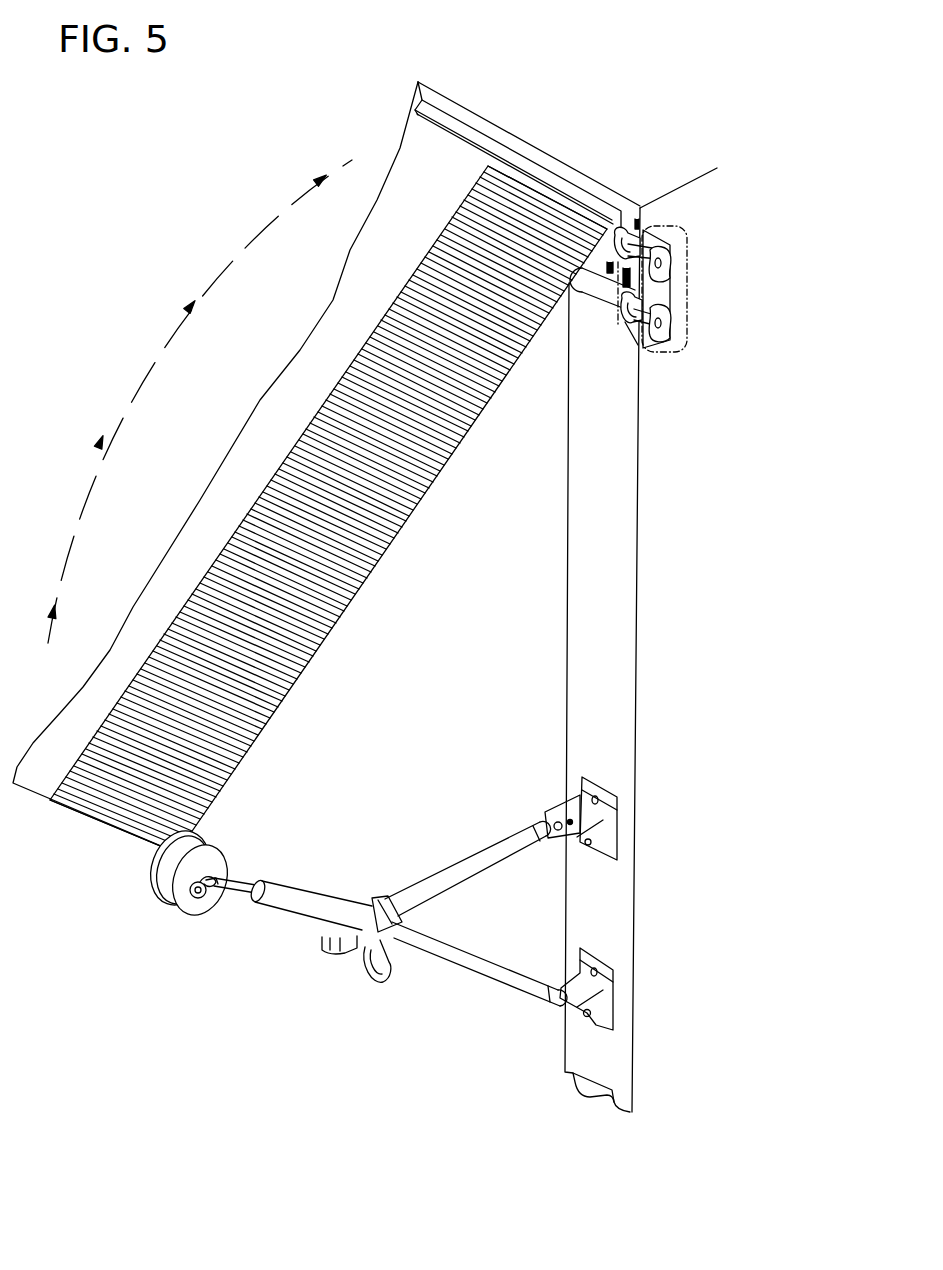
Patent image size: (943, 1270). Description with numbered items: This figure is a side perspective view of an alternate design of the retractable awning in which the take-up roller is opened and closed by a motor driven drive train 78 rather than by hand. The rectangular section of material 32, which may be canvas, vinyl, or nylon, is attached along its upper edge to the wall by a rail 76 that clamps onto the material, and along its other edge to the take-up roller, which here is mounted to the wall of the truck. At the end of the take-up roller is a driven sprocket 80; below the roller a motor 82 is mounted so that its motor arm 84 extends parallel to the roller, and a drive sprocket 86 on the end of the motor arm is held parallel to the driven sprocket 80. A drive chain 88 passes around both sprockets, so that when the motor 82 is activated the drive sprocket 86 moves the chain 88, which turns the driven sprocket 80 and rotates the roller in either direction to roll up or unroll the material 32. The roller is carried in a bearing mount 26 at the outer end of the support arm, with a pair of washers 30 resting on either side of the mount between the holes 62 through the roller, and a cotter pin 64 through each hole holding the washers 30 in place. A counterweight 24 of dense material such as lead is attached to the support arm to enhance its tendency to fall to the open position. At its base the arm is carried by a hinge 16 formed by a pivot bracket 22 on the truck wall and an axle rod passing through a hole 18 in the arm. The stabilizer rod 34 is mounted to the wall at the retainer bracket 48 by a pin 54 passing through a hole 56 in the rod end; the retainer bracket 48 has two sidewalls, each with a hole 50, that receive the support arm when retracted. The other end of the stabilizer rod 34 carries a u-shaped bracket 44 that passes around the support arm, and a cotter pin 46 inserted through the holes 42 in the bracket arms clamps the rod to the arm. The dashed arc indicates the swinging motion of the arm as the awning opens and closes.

The hinge 16 is at (612, 985).
The hole 18 is at (587, 1020).
The pivot bracket 22 is at (587, 1013).
The counterweight 24 is at (297, 920).
The bearing mount 26 is at (157, 893).
The washers 30 is at (202, 910).
The rectangular section of material 32 is at (327, 640).
The stabilizer rod 34 is at (433, 883).
The hole 42 is at (367, 980).
The u-shaped bracket 44 is at (353, 903).
The cotter pin 46 is at (380, 977).
The retainer bracket 48 is at (610, 825).
The hole 50 is at (588, 842).
The pin 54 is at (545, 830).
The hole 56 is at (560, 822).
The holes 62 is at (195, 912).
The cotter pin 64 is at (220, 903).
The rail 76 is at (442, 118).
The motor driven drive train 78 is at (650, 237).
The driven sprocket 80 is at (667, 260).
The motor 82 is at (598, 307).
The motor arm 84 is at (635, 318).
The drive sprocket 86 is at (667, 330).
The drive chain 88 is at (670, 292).